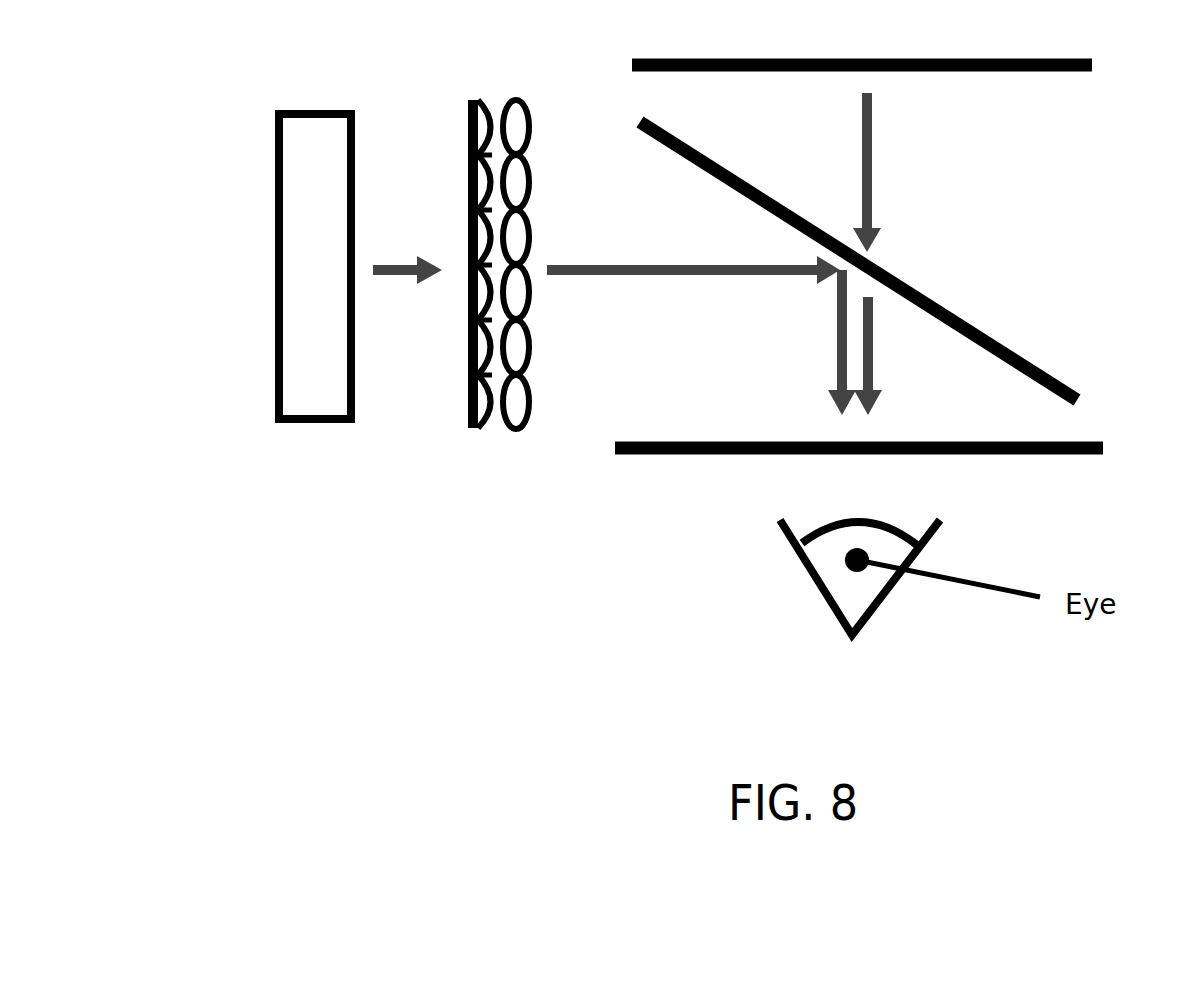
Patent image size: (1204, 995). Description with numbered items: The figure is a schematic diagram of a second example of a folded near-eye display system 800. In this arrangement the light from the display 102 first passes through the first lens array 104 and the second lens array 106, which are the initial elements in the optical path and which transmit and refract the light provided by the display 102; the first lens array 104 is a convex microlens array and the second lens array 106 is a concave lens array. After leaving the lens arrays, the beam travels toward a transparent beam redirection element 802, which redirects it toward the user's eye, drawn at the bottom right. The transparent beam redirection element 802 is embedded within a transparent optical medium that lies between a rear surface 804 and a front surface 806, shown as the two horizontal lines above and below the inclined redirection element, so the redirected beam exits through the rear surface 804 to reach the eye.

The display 102 is at (317, 303).
The first lens array 104 is at (493, 412).
The second lens array 106 is at (523, 413).
The folded near-eye display system 800 is at (544, 785).
The transparent beam redirection element 802 is at (895, 282).
The rear surface 804 is at (930, 448).
The front surface 806 is at (988, 65).